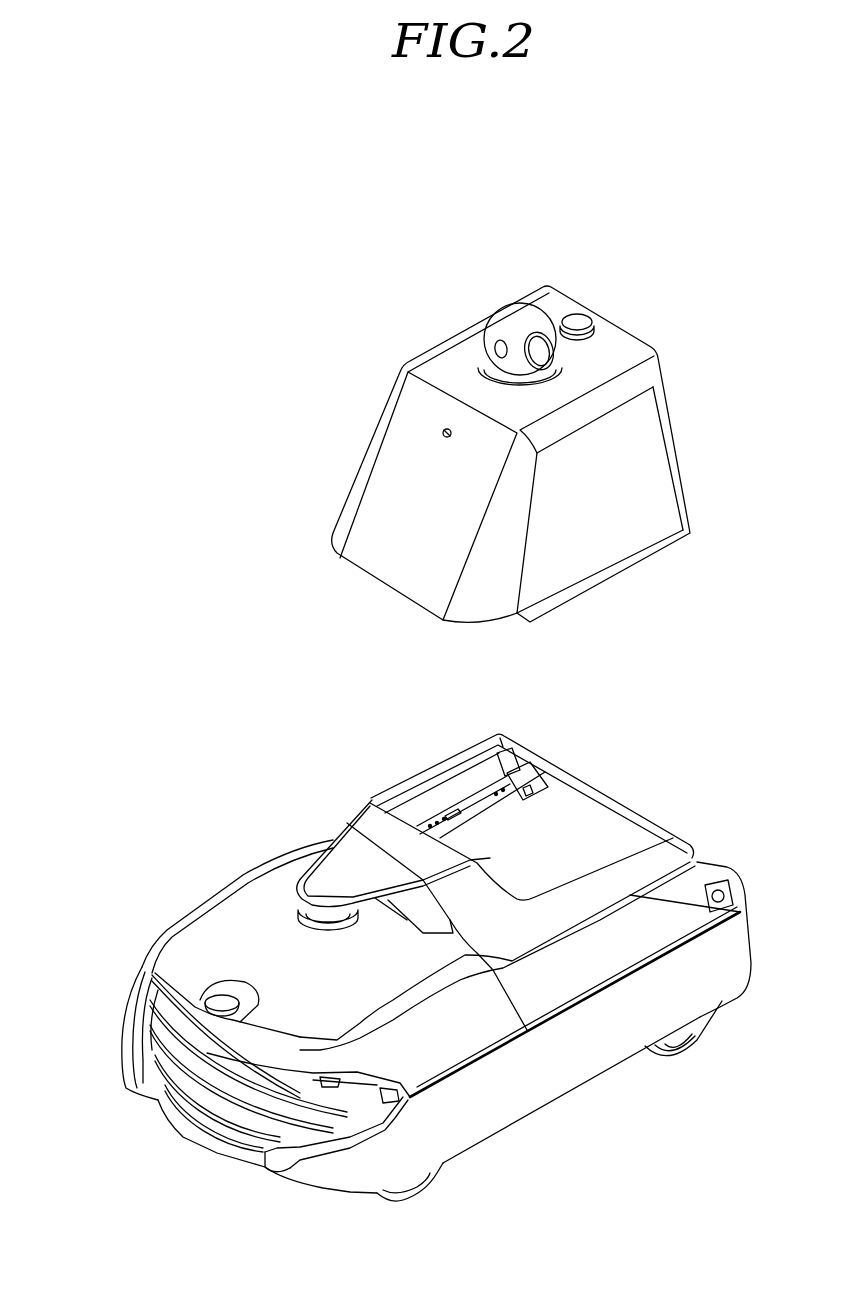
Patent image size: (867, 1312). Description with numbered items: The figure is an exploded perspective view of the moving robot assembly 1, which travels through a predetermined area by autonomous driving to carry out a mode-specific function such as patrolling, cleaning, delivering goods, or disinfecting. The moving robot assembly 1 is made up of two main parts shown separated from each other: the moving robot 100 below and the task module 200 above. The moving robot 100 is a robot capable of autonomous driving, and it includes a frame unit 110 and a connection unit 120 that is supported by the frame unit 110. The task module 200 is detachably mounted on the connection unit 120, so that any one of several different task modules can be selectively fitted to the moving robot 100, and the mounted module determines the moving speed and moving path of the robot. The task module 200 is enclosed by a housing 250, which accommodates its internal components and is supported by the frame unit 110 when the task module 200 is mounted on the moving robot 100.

The moving robot assembly 1 is at (427, 273).
The moving robot 100 is at (699, 723).
The frame unit 110 is at (573, 820).
The connection unit 120 is at (533, 780).
The task module 200 is at (713, 449).
The housing 250 is at (645, 368).